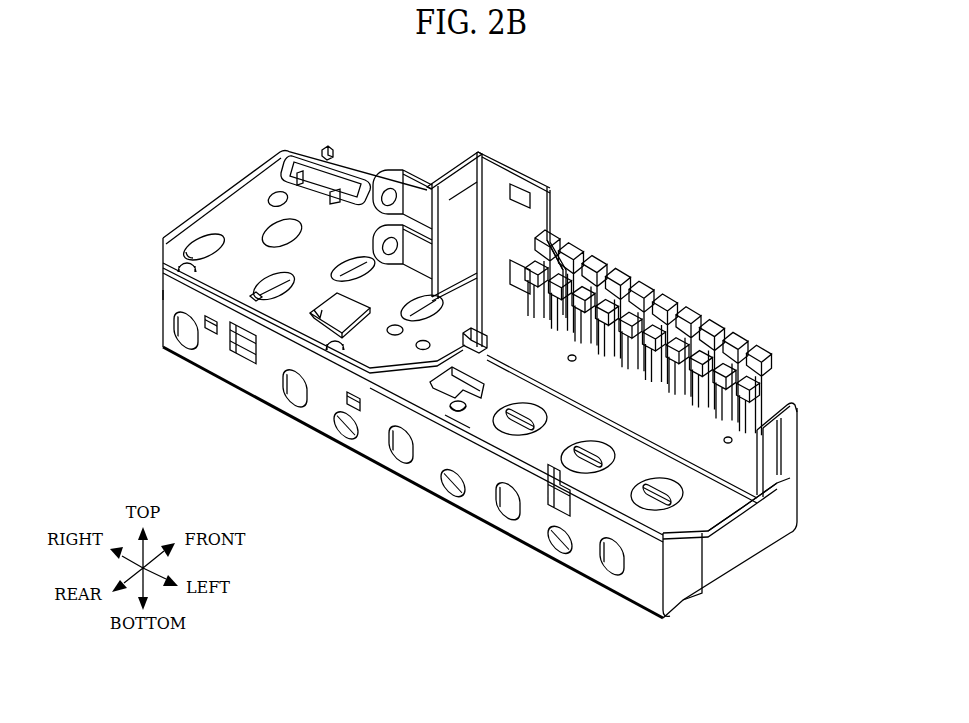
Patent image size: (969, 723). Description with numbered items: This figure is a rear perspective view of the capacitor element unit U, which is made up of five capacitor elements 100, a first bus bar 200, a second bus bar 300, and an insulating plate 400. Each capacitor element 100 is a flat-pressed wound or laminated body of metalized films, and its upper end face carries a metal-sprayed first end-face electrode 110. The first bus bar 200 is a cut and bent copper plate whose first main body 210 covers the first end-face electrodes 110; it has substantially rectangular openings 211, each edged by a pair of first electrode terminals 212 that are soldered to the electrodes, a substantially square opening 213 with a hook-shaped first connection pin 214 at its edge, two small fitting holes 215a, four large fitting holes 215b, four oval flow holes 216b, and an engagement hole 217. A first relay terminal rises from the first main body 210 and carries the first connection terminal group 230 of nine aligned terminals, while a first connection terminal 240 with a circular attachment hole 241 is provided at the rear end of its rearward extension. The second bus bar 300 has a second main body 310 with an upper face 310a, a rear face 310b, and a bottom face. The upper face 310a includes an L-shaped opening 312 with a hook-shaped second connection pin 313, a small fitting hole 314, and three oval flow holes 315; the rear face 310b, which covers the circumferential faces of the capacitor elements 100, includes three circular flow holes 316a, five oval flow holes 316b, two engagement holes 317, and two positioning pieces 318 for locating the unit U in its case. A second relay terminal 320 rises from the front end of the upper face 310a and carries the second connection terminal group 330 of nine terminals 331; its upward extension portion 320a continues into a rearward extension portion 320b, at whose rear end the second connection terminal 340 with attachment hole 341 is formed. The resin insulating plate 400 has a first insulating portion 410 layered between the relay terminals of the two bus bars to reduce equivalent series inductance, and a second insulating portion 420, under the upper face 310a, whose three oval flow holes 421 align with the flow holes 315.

The capacitor element unit U is at (783, 207).
The capacitor element 100 is at (740, 568).
The first end-face electrode 110 is at (318, 160).
The first bus bar 200 is at (800, 370).
The first main body 210 is at (240, 200).
The opening 211 is at (297, 172).
The first electrode terminal 212 is at (333, 152).
The opening 213 is at (350, 288).
The first connection pin 214 is at (323, 307).
The small fitting hole 215a is at (418, 345).
The large fitting hole 215b is at (272, 194).
The flow hole 216b is at (198, 238).
The engagement hole 217 is at (250, 292).
The first connection terminal group 230 is at (762, 363).
The first connection terminal 240 is at (403, 207).
The attachment hole 241 is at (389, 256).
The second bus bar 300 is at (658, 318).
The second main body 310 is at (160, 323).
The upper face 310a is at (710, 512).
The rear face 310b is at (160, 295).
The opening 312 is at (445, 395).
The second connection pin 313 is at (483, 388).
The small fitting hole 314 is at (457, 413).
The flow hole 315 is at (517, 407).
The flow hole 316a is at (346, 436).
The flow hole 316b is at (178, 338).
The engagement hole 317 is at (205, 333).
The positioning piece 318 is at (233, 355).
The second relay terminal 320 is at (780, 477).
The upward extension portion 320a is at (530, 237).
The rearward extension portion 320b is at (468, 204).
The second connection terminal group 330 is at (703, 303).
The terminal 331 is at (737, 327).
The second connection terminal 340 is at (392, 170).
The attachment hole 341 is at (388, 188).
The insulating plate 400 is at (527, 167).
The first insulating portion 410 is at (522, 200).
The second insulating portion 420 is at (470, 340).
The flow hole 421 is at (527, 421).